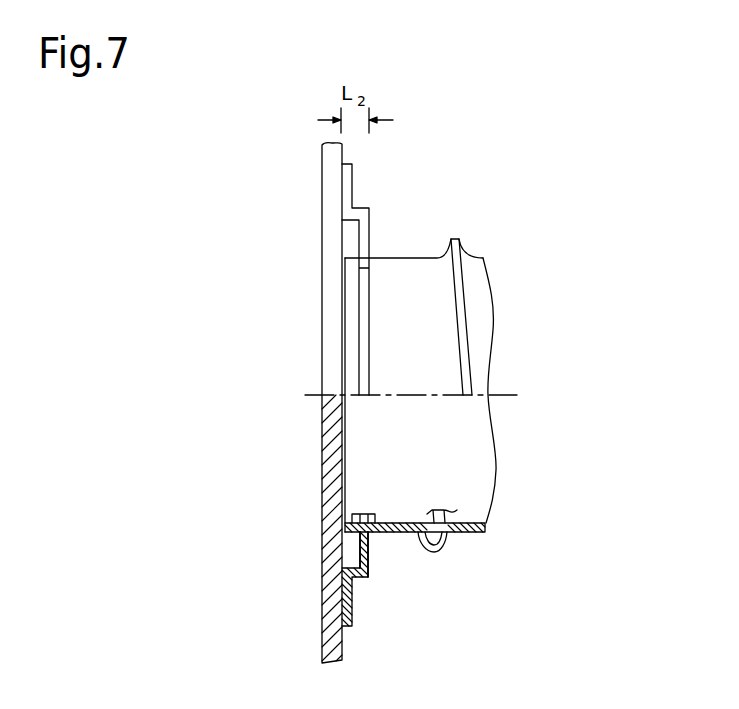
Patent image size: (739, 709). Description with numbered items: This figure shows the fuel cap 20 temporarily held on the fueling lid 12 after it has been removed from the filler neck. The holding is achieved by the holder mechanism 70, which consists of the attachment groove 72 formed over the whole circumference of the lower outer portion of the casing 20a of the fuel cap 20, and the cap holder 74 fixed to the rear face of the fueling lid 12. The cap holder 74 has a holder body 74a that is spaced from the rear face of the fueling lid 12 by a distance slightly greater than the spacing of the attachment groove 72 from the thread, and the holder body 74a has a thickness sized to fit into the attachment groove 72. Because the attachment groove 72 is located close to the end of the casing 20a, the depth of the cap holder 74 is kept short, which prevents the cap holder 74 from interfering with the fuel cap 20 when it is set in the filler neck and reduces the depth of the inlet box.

The fueling lid 12 is at (328, 208).
The fuel cap 20 is at (477, 402).
The casing 20a is at (468, 531).
The holder mechanism 70 is at (421, 552).
The attachment groove 72 is at (370, 537).
The cap holder 74 is at (394, 415).
The holder body 74a is at (365, 555).